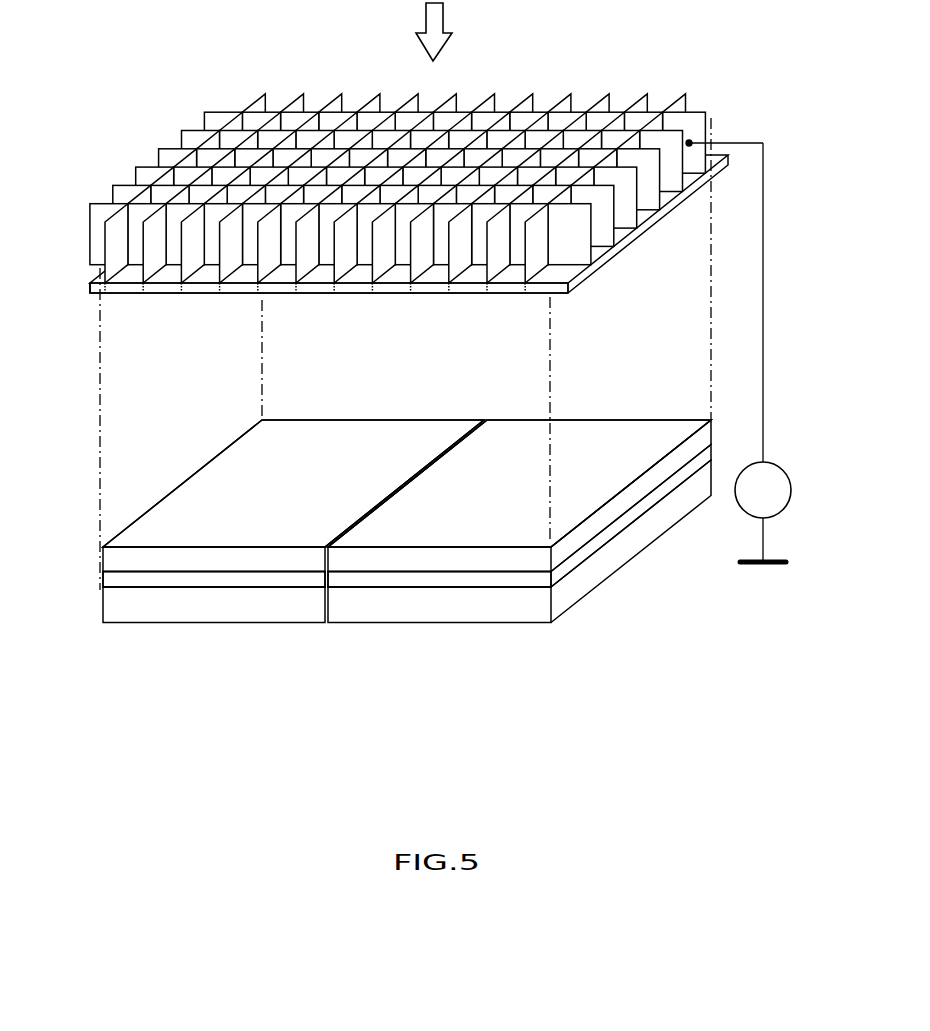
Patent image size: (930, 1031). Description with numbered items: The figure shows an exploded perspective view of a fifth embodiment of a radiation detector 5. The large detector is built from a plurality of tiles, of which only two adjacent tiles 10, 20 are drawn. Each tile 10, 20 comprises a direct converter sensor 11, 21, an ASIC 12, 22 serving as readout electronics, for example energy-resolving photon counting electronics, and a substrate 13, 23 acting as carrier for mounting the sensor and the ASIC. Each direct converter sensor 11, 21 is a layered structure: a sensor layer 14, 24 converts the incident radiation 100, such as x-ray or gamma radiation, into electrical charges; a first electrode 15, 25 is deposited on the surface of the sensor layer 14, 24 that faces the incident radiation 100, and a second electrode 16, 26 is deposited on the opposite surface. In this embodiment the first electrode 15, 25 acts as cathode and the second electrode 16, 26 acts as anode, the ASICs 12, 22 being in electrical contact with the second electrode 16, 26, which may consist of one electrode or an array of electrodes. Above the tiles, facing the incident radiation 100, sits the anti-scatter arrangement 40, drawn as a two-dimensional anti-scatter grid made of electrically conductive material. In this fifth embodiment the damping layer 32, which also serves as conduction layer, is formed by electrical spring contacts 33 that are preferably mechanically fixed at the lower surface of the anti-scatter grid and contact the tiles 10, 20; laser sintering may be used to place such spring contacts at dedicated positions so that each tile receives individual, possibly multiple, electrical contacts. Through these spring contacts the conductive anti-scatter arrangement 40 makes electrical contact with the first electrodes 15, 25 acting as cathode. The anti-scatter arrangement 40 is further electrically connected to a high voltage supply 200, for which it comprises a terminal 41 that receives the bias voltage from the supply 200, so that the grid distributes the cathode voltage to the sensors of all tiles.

The radiation detector 5 is at (382, 419).
The tile 10 is at (268, 556).
The direct converter sensor 11 is at (168, 462).
The ASIC 12 is at (124, 580).
The substrate 13 is at (129, 612).
The sensor layer 14 is at (125, 559).
The first electrode 15 is at (226, 478).
The second electrode 16 is at (169, 585).
The tile 20 is at (518, 526).
The direct converter sensor 21 is at (644, 400).
The ASIC 22 is at (607, 534).
The substrate 23 is at (517, 610).
The sensor layer 24 is at (641, 491).
The first electrode 25 is at (581, 437).
The second electrode 26 is at (473, 585).
The damping layer 32 is at (90, 286).
The electrical spring contacts 33 is at (368, 286).
The anti-scatter arrangement 40 is at (160, 148).
The terminal 41 is at (690, 143).
The incident radiation 100 is at (443, 13).
The high voltage supply 200 is at (788, 507).